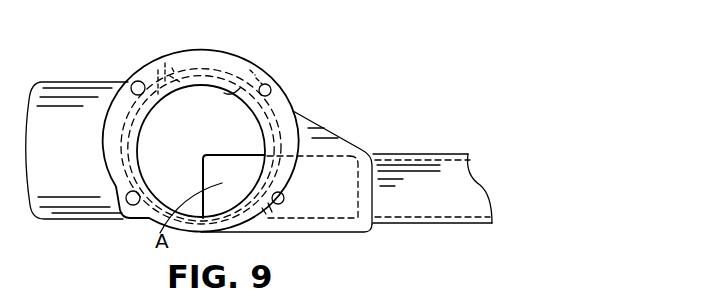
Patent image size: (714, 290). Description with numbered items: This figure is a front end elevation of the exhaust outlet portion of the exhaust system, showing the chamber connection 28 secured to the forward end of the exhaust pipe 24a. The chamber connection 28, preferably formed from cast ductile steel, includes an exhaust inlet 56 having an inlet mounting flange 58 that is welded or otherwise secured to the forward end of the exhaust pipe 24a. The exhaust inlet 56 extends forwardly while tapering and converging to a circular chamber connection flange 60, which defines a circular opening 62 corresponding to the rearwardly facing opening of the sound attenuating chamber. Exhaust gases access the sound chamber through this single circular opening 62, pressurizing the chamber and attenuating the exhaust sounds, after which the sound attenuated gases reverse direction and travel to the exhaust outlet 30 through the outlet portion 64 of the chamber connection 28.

The chamber connection 28 is at (215, 118).
The exhaust outlet 30 is at (81, 82).
The outlet portion 64 is at (165, 60).
The circular opening 62 is at (240, 88).
The chamber connection flange 60 is at (287, 104).
The exhaust inlet 56 is at (340, 143).
The inlet mounting flange 58 is at (310, 233).
The exhaust pipe 24a is at (392, 207).